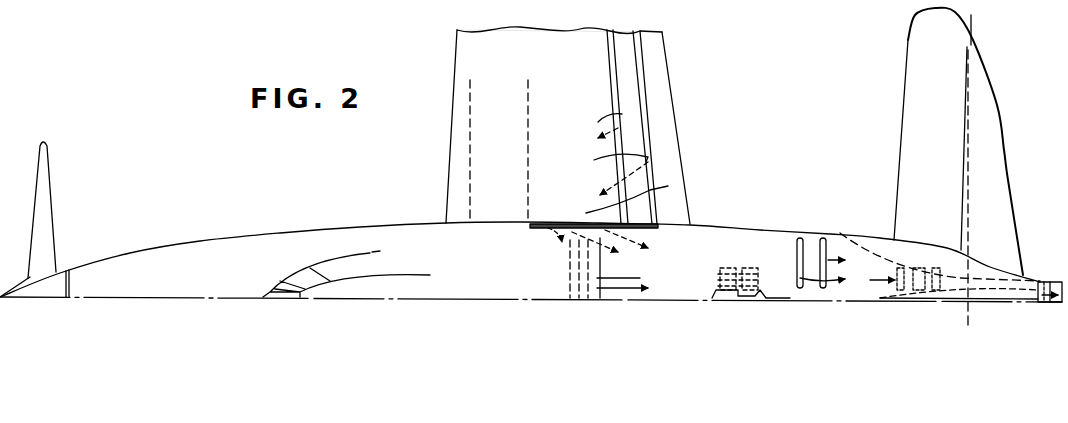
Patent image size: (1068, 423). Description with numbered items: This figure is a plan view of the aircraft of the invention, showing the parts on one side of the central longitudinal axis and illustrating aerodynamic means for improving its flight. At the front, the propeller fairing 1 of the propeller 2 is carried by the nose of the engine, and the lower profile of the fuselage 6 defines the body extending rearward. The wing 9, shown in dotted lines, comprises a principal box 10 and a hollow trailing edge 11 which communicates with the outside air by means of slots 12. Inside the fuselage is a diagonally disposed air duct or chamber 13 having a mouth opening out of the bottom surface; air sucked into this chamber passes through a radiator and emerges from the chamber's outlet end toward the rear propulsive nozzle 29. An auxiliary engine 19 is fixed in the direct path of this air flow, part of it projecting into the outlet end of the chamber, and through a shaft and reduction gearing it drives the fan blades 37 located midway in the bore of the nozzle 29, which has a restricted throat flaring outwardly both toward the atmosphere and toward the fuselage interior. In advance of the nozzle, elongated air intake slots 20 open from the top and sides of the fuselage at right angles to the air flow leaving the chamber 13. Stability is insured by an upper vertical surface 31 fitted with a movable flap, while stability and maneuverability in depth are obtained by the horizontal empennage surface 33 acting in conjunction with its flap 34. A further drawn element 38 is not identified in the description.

The propeller fairing 1 is at (14, 285).
The propeller 2 is at (45, 212).
The lower profile of the fuselage 6 is at (251, 233).
The wing 9 is at (490, 40).
The principal box 10 is at (482, 160).
The hollow trailing edge 11 is at (590, 214).
The slots 12 is at (612, 132).
The air duct or chamber 13 is at (585, 270).
The auxiliary engine 19 is at (750, 266).
The elongated air intake slots 20 is at (801, 240).
The nozzle 29 is at (977, 280).
The upper vertical surface 31 is at (975, 298).
The horizontal empennage surface 33 is at (953, 118).
The flap 34 is at (990, 164).
The fan blades 37 is at (1053, 302).
The grating 38 is at (636, 222).